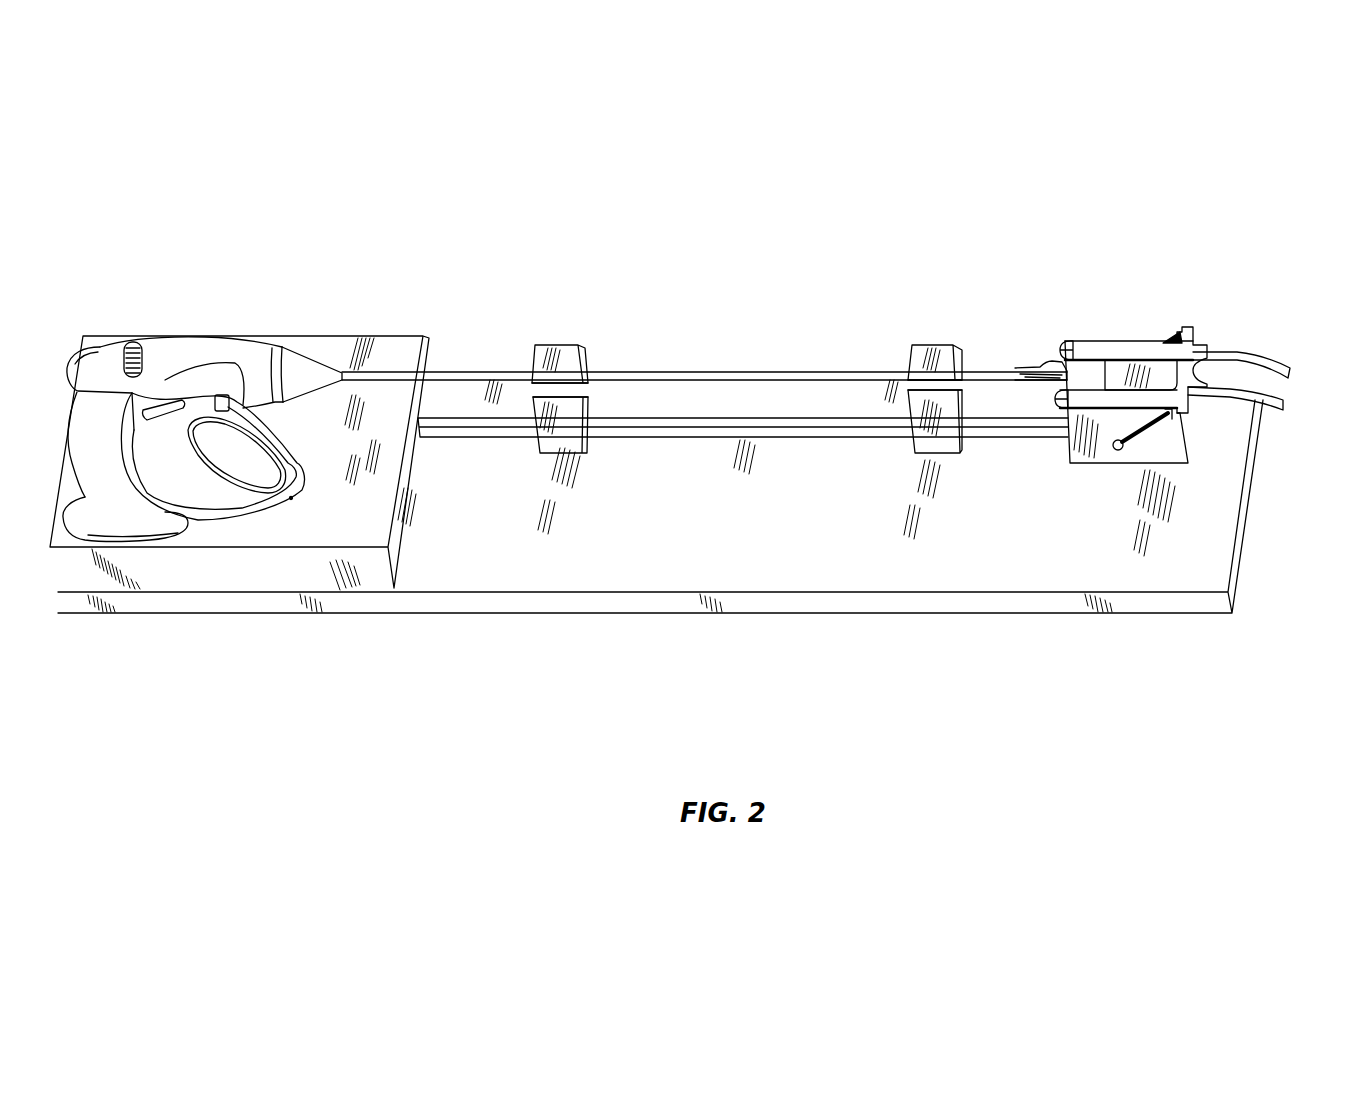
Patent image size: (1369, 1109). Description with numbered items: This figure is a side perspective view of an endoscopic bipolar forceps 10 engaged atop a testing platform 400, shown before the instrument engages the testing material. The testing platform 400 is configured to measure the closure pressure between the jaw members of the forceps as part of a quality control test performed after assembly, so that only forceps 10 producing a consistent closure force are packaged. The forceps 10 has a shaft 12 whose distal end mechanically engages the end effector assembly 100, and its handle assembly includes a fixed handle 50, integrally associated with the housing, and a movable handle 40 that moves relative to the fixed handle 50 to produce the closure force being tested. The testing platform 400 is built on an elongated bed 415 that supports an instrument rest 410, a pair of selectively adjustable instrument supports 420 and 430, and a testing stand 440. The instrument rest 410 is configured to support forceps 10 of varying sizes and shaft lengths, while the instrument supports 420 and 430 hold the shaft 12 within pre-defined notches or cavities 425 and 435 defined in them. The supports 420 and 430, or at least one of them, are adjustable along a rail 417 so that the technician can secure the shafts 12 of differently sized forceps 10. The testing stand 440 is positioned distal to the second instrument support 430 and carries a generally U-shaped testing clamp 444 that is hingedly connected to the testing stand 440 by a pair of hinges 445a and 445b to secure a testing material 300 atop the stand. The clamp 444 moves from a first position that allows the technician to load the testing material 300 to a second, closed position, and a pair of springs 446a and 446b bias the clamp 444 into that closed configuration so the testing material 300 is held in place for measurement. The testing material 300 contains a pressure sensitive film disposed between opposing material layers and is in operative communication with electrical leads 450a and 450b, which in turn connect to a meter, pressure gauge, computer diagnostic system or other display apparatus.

The endoscopic bipolar forceps 10 is at (226, 320).
The shaft 12 is at (706, 372).
The movable handle 40 is at (293, 500).
The fixed handle 50 is at (140, 525).
The end effector assembly 100 is at (1036, 360).
The testing material 300 is at (1107, 368).
The testing platform 400 is at (390, 280).
The instrument rest 410 is at (404, 342).
The elongated bed 415 is at (776, 567).
The rail 417 is at (672, 437).
The instrument support 420 is at (548, 347).
The notch or cavity 425 is at (576, 389).
The instrument support 430 is at (928, 350).
The notch or cavity 435 is at (906, 392).
The testing stand 440 is at (1164, 450).
The testing clamp 444 is at (1191, 342).
The hinge 445a is at (1082, 342).
The hinge 445b is at (1063, 408).
The spring 446a is at (1180, 335).
The spring 446b is at (1145, 437).
The electrical lead 450a is at (1278, 363).
The electrical lead 450b is at (1283, 398).